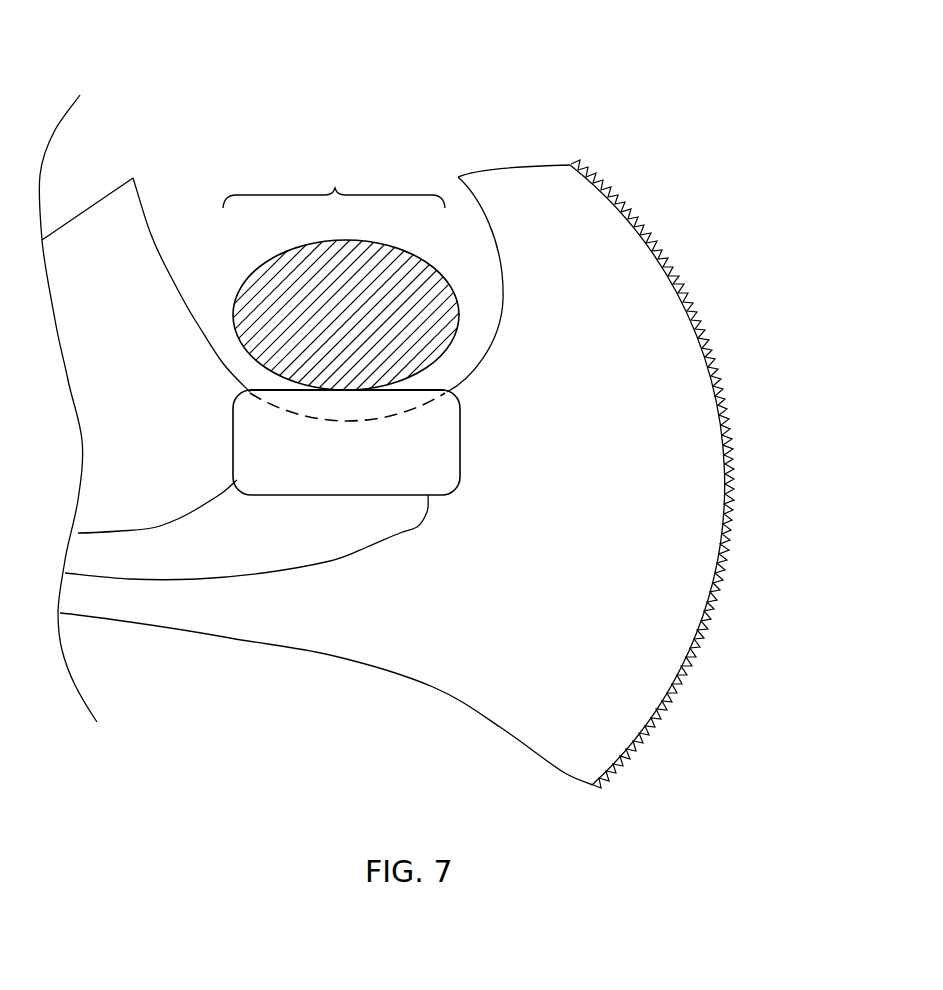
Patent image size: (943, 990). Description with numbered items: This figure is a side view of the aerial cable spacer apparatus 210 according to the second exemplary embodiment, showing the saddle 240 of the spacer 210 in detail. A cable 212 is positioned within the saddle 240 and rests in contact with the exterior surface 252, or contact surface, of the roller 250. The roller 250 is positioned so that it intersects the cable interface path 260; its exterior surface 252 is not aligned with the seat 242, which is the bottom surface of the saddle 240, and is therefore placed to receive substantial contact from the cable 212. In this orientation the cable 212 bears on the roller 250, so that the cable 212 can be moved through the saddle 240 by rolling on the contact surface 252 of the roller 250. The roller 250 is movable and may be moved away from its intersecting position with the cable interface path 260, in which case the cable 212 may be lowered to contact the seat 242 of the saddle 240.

The aerial cable spacer apparatus 210 is at (228, 53).
The cable 212 is at (367, 293).
The saddle 240 is at (592, 245).
The seat 242 is at (345, 418).
The roller 250 is at (423, 452).
The exterior surface 252 is at (380, 387).
The cable interface path 260 is at (335, 188).